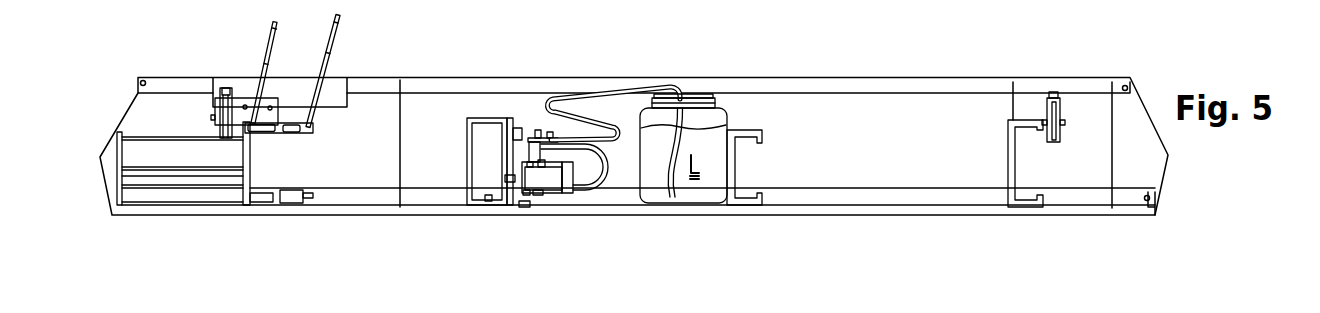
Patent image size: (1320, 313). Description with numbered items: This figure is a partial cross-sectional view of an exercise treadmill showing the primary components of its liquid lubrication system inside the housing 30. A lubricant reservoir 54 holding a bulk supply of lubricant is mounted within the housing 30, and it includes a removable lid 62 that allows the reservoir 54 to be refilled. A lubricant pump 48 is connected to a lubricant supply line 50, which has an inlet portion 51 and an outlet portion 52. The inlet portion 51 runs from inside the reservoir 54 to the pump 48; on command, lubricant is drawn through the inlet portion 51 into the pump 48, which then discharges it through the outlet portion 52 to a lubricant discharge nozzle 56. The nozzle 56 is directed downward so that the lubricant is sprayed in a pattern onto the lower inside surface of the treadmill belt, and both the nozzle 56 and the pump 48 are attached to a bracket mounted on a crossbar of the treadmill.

The housing 30 is at (926, 1).
The lubricant pump 48 is at (554, 183).
The lubricant supply line 50 is at (536, 120).
The inlet portion 51 is at (583, 94).
The outlet portion 52 is at (607, 191).
The lubricant reservoir 54 is at (706, 139).
The lubricant discharge nozzle 56 is at (531, 206).
The removable lid 62 is at (709, 95).